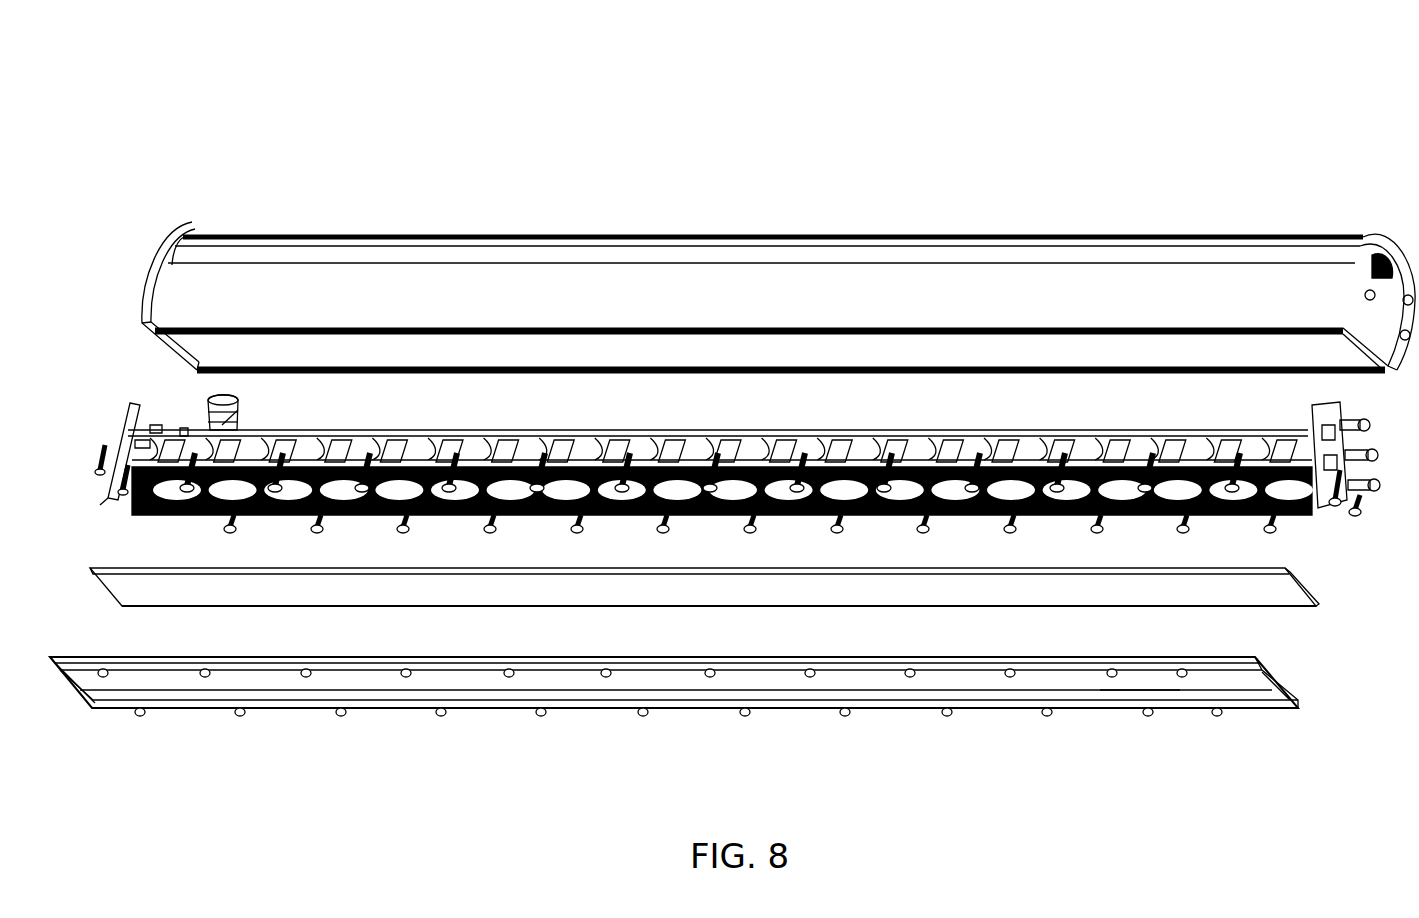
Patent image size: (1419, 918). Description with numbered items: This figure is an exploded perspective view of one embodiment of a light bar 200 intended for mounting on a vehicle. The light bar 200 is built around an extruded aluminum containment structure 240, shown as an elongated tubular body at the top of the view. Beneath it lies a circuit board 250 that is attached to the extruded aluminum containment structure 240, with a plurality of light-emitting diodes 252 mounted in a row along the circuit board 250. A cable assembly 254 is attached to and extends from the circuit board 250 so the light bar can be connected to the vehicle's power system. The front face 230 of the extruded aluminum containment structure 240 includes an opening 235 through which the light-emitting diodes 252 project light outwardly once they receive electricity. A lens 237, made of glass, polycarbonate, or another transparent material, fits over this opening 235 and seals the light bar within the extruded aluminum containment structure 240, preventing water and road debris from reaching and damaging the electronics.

The light bar 200 is at (678, 122).
The extruded aluminum containment structure 240 is at (1275, 287).
The circuit board 250 is at (1222, 447).
The cable assembly 254 is at (215, 408).
The light-emitting diode 252 is at (1200, 510).
The lens 237 is at (1296, 598).
The opening 235 is at (1132, 694).
The front face 230 is at (1252, 715).